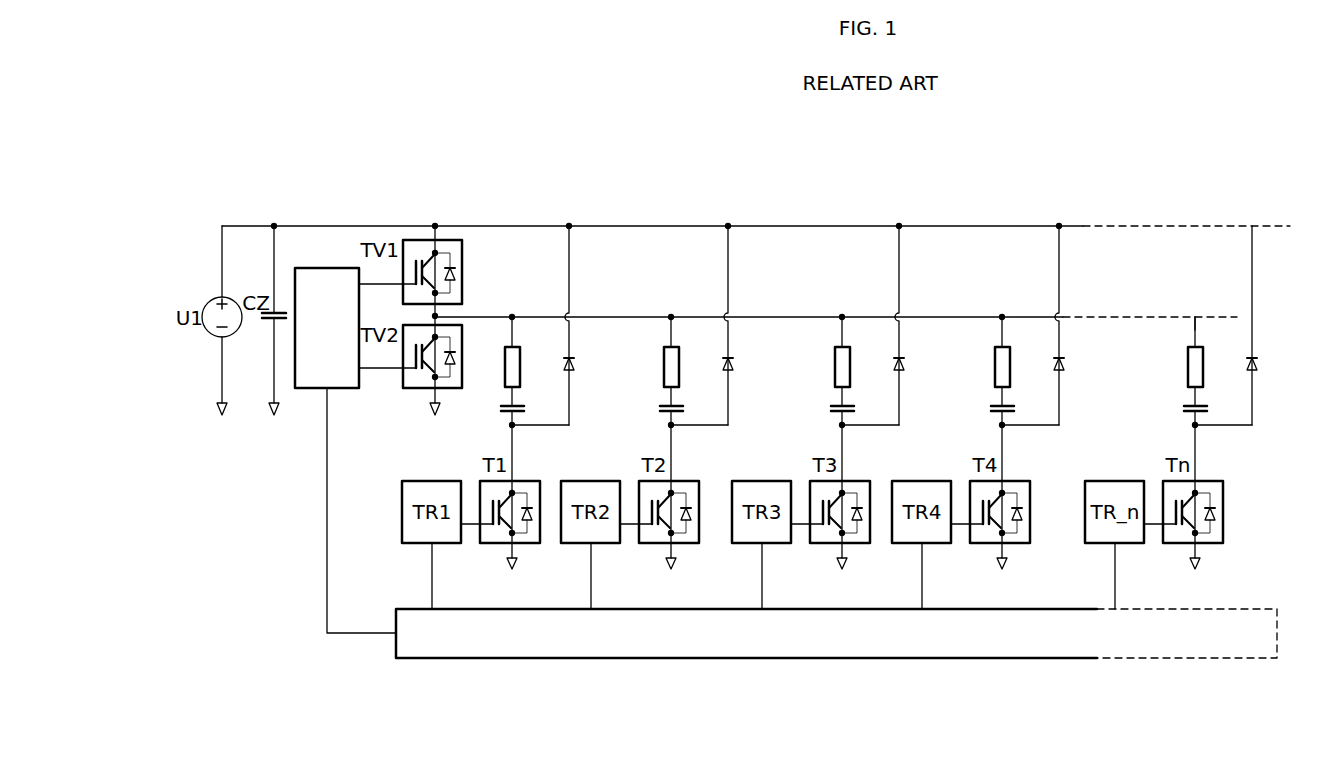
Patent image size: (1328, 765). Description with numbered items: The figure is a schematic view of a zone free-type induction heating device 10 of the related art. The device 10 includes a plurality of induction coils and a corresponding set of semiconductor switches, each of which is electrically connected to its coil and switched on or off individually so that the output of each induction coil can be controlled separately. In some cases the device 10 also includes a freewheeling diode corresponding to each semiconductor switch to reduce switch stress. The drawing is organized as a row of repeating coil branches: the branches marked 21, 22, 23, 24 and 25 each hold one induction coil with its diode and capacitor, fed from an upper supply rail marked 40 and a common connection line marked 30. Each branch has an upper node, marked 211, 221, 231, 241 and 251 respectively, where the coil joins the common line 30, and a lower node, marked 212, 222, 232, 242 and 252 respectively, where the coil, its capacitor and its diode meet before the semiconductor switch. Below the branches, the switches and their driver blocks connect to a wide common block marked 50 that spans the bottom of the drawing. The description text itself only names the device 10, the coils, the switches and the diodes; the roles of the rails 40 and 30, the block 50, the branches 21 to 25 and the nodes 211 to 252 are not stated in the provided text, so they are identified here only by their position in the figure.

The zone free-type induction heating device 10 is at (378, 656).
The DC input bus 40 is at (292, 214).
The common bus line 30 is at (488, 316).
The controller 50 is at (812, 645).
The first module 21 is at (530, 354).
The second module 22 is at (689, 354).
The third module 23 is at (860, 354).
The fourth module 24 is at (1020, 354).
The n-th module 25 is at (1213, 354).
The first node of first module 211 is at (512, 316).
The second node of first module 212 is at (510, 425).
The first node of second module 221 is at (671, 316).
The second node of second module 222 is at (669, 425).
The first node of third module 231 is at (842, 316).
The second node of third module 232 is at (840, 425).
The first node of fourth module 241 is at (1002, 316).
The second node of fourth module 242 is at (1000, 425).
The first node of n-th module 251 is at (1195, 316).
The second node of n-th module 252 is at (1193, 425).